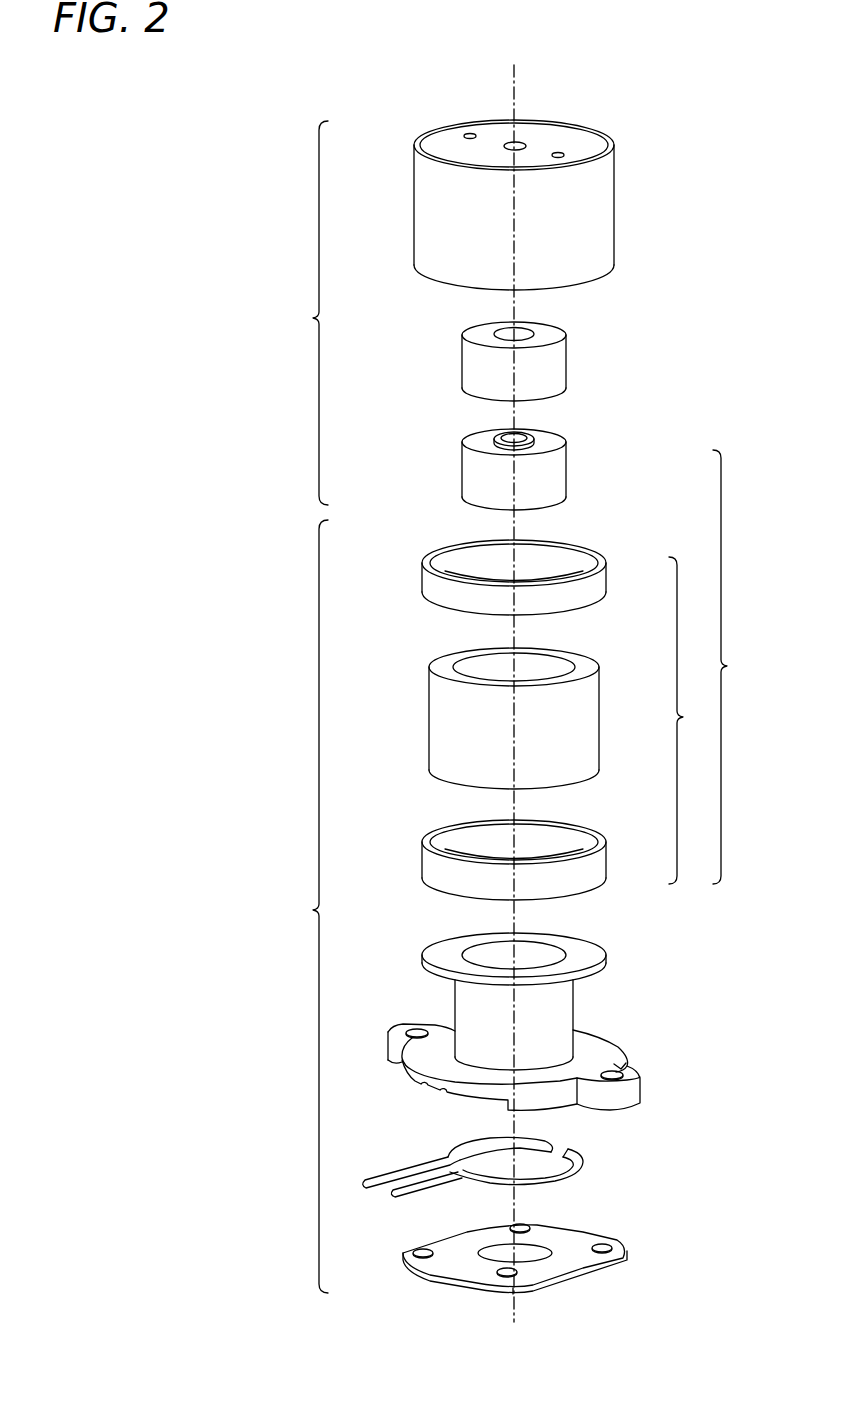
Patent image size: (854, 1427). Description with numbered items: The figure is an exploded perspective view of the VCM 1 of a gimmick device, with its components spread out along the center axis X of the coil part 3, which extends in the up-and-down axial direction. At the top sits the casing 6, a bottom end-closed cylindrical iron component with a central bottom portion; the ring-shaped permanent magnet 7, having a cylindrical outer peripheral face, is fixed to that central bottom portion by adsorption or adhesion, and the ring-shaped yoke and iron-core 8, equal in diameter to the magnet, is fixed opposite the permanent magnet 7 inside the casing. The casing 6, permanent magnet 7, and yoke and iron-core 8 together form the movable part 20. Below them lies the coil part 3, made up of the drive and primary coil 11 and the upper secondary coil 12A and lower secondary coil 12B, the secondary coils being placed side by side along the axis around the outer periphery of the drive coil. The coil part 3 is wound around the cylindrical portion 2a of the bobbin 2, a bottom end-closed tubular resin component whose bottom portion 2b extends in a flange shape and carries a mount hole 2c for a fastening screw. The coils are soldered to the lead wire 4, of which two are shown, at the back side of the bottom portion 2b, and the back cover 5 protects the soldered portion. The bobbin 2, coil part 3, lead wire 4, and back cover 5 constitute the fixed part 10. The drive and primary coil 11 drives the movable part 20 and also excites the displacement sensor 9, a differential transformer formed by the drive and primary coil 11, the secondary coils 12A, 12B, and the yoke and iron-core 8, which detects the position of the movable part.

The VCM 1 is at (665, 106).
The center axis X is at (517, 82).
The movable part 20 is at (305, 313).
The fixed part 10 is at (305, 906).
The displacement sensor 9 is at (729, 667).
The coil part 3 is at (685, 720).
The casing 6 is at (614, 210).
The permanent magnet 7 is at (566, 361).
The yoke and iron-core 8 is at (566, 470).
The upper secondary coil 12A is at (607, 582).
The drive and primary coil 11 is at (600, 722).
The lower secondary coil 12B is at (607, 866).
The bobbin 2 is at (607, 961).
The cylindrical portion 2a is at (575, 1004).
The bottom portion 2b is at (640, 1088).
The mount hole 2c is at (623, 1064).
The lead wire 4 is at (585, 1160).
The back cover 5 is at (630, 1258).